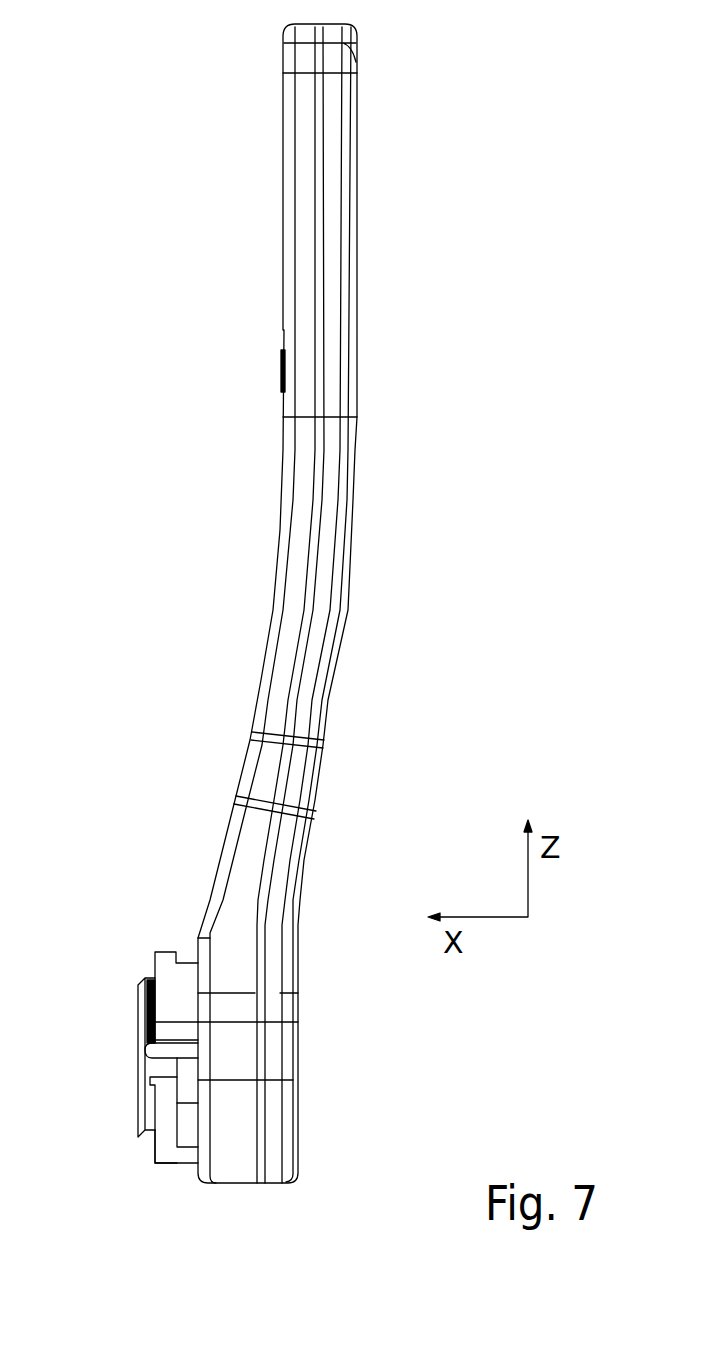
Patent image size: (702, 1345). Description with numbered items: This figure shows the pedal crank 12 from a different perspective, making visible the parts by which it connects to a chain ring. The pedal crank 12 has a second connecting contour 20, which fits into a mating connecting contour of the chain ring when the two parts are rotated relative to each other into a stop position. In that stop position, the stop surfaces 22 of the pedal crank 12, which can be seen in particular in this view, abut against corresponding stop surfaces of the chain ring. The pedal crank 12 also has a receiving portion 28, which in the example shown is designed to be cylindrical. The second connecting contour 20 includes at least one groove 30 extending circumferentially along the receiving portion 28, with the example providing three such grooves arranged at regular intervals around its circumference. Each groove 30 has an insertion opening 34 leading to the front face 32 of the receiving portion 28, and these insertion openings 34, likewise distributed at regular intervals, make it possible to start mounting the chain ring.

The pedal crank 12 is at (282, 993).
The second connecting contour 20 is at (167, 1153).
The stop surfaces 22 is at (190, 1132).
The receiving portion 28 is at (155, 1165).
The groove 30 is at (190, 1083).
The front face 32 is at (138, 1023).
The insertion opening 34 is at (143, 1060).